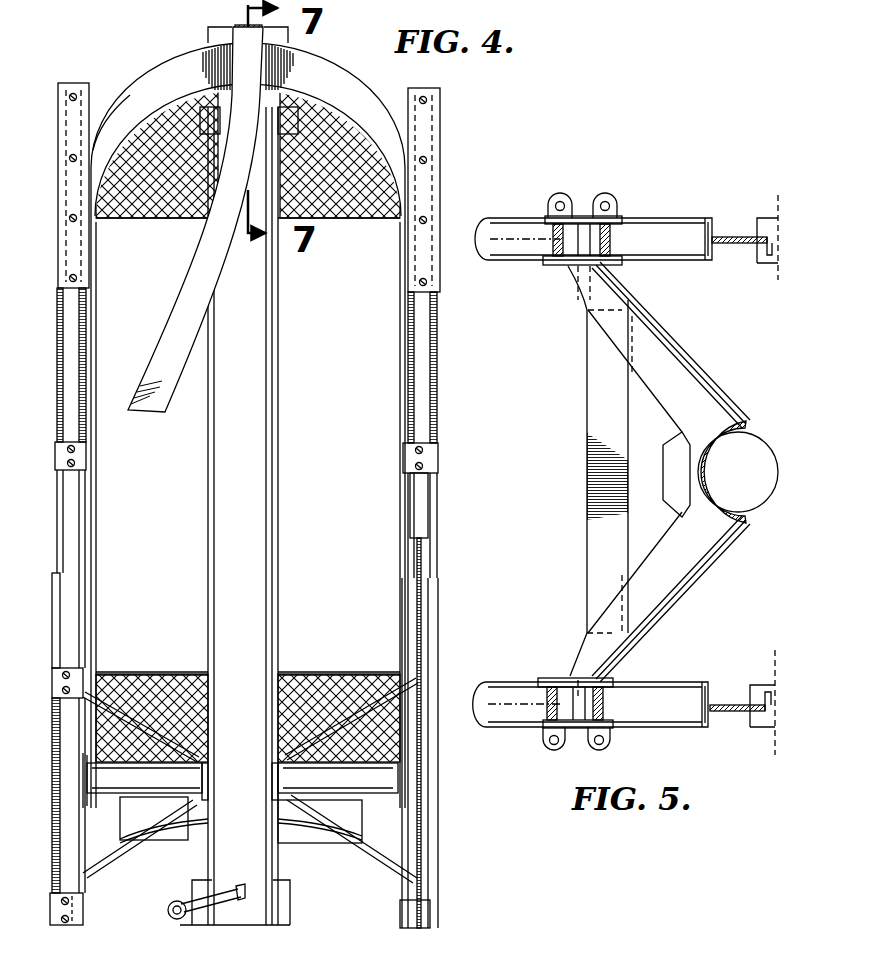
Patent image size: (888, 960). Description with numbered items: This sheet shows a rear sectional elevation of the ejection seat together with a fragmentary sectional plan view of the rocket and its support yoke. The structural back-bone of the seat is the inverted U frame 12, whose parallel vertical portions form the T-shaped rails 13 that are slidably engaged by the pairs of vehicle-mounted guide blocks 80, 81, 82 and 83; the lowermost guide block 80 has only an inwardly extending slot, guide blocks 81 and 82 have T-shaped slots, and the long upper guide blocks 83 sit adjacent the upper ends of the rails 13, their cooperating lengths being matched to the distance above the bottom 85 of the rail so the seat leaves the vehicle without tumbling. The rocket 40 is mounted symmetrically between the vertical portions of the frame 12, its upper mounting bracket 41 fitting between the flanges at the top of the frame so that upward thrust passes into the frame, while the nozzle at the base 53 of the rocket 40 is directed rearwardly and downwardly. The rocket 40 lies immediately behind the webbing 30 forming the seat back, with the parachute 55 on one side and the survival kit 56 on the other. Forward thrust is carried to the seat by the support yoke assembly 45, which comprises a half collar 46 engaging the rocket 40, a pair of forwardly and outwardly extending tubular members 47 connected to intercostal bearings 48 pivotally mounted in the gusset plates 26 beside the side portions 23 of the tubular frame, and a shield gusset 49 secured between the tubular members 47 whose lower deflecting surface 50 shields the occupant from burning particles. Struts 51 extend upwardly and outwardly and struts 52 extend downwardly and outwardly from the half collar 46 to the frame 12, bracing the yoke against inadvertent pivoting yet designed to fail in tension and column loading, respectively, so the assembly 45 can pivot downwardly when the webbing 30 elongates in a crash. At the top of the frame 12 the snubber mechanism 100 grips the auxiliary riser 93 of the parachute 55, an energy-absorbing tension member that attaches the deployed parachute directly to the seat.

In FIG. 4, the inverted U frame 12 is at (160, 70).
In FIG. 4, the T-shaped rails 13 is at (70, 342).
In FIG. 5, the T-shaped rails 13 is at (728, 240).
In FIG. 5, the side portions 23 is at (487, 237).
In FIG. 5, the gusset plates 26 is at (503, 255).
In FIG. 4, the webbing 30 is at (343, 192).
In FIG. 4, the rocket 40 is at (243, 516).
In FIG. 5, the rocket 40 is at (752, 433).
In FIG. 4, the mounting bracket 41 is at (188, 131).
In FIG. 4, the support yoke assembly 45 is at (110, 819).
In FIG. 5, the support yoke assembly 45 is at (582, 508).
In FIG. 4, the half collar 46 is at (203, 783).
In FIG. 5, the half collar 46 is at (686, 484).
In FIG. 4, the tubular members 47 is at (103, 781).
In FIG. 5, the tubular members 47 is at (650, 362).
In FIG. 5, the intercostal bearings 48 is at (553, 265).
In FIG. 4, the shield gusset 49 is at (300, 822).
In FIG. 5, the shield gusset 49 is at (587, 456).
In FIG. 4, the lower deflecting surface 50 is at (188, 832).
In FIG. 5, the lower deflecting surface 50 is at (643, 430).
In FIG. 4, the struts 51 is at (138, 682).
In FIG. 4, the struts 52 is at (97, 864).
In FIG. 4, the base of the rocket 53 is at (252, 928).
In FIG. 4, the parachute 55 is at (152, 445).
In FIG. 4, the survival kit 56 is at (339, 445).
In FIG. 4, the guide block 80 is at (53, 908).
In FIG. 4, the guide block 81 is at (52, 690).
In FIG. 4, the guide block 82 is at (56, 460).
In FIG. 4, the guide blocks 83 is at (68, 143).
In FIG. 4, the bottom of the rail 85 is at (70, 928).
In FIG. 4, the auxiliary riser 93 is at (190, 270).
In FIG. 4, the snubber mechanism 100 is at (221, 24).